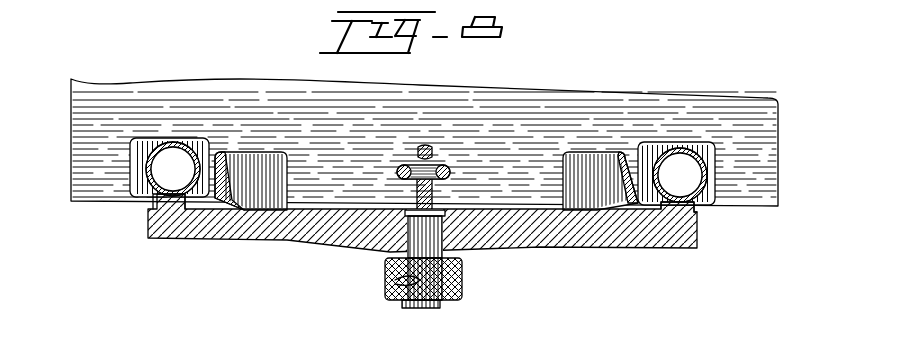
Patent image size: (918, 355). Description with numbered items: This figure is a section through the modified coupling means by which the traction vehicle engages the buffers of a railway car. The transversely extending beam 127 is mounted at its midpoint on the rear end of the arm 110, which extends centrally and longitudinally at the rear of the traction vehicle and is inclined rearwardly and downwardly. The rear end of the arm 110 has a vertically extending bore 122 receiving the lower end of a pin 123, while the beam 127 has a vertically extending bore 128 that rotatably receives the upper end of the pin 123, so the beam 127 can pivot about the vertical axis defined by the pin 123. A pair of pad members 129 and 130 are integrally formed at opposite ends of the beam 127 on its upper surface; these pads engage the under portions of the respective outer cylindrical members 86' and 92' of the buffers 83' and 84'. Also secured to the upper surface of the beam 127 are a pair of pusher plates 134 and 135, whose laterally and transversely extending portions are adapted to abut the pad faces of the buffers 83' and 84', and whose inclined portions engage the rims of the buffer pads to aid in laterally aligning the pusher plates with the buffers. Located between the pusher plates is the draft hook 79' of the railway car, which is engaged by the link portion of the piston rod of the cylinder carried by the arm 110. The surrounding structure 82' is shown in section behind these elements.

The table/plate 82' is at (424, 129).
The buffer 83' is at (118, 168).
The outer cylindrical member 86' is at (121, 169).
The pad member 129 is at (150, 207).
The pusher plate 134 is at (268, 179).
The draft hook 79' is at (404, 178).
The pusher plate 135 is at (573, 180).
The buffer 84' is at (736, 175).
The outer cylindrical member 92' is at (729, 177).
The pad member 130 is at (695, 208).
The beam 127 is at (360, 240).
The bore 128 is at (428, 234).
The arm 110 is at (462, 286).
The bore 122 is at (398, 283).
The pin 123 is at (430, 289).